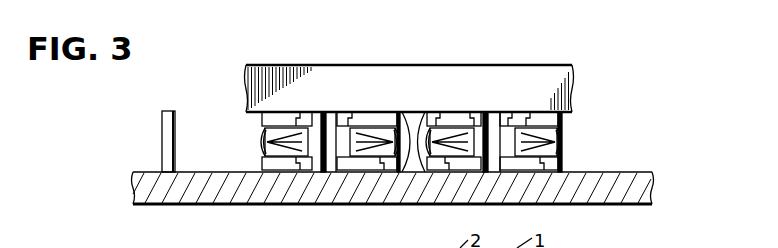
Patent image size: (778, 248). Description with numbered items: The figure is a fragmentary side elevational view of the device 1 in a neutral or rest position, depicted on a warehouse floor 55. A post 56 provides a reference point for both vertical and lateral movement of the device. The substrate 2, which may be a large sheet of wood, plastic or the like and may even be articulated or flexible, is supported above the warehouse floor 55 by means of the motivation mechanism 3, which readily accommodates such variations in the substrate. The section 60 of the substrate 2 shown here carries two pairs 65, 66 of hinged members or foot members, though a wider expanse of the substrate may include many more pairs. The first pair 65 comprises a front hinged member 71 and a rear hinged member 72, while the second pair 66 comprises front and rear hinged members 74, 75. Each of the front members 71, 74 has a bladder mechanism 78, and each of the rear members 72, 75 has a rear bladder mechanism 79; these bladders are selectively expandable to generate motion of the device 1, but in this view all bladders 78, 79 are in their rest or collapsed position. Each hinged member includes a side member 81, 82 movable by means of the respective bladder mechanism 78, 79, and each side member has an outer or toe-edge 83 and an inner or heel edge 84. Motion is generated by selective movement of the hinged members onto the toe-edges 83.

The device 1 is at (481, 63).
The substrate 2 is at (387, 65).
The motivation mechanism 3 is at (575, 120).
The warehouse floor 55 is at (640, 172).
The post 56 is at (168, 110).
The section of substrate 60 is at (365, 75).
The first pair of hinged members 65 is at (510, 117).
The second pair of hinged members 66 is at (348, 117).
The front hinged member 71 is at (523, 117).
The rear hinged member 72 is at (438, 117).
The front hinged member 74 is at (399, 173).
The rear hinged member 75 is at (262, 118).
The bladder mechanism 78 is at (405, 112).
The rear bladder mechanism 79 is at (262, 141).
The side member 81 is at (411, 173).
The side member 82 is at (259, 171).
The toe-edge 83 is at (262, 160).
The heel edge 84 is at (324, 173).